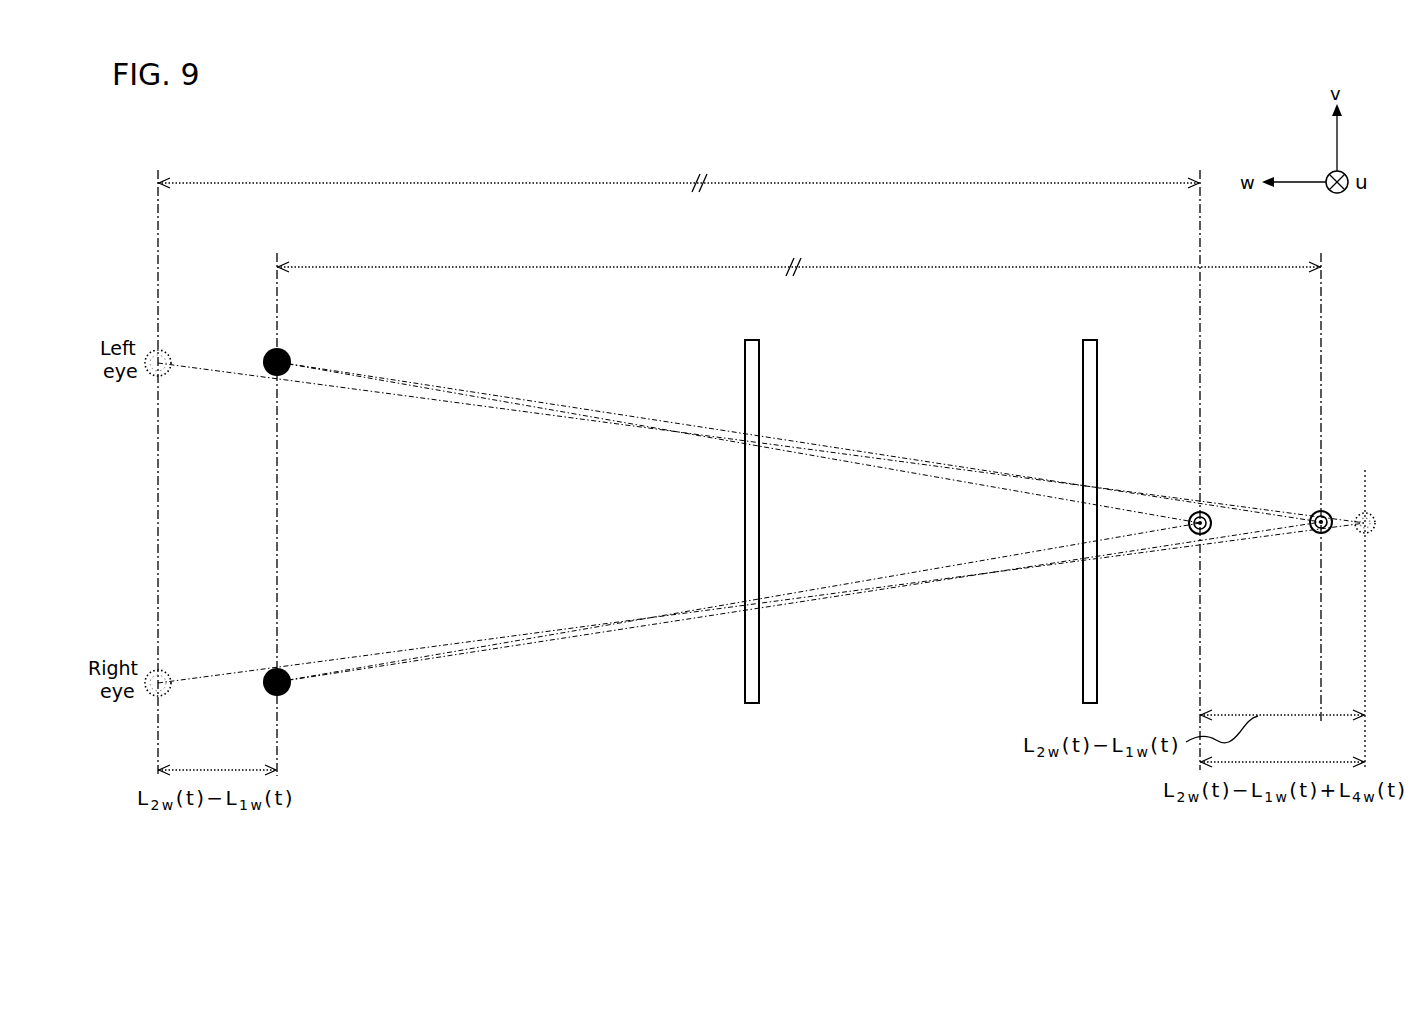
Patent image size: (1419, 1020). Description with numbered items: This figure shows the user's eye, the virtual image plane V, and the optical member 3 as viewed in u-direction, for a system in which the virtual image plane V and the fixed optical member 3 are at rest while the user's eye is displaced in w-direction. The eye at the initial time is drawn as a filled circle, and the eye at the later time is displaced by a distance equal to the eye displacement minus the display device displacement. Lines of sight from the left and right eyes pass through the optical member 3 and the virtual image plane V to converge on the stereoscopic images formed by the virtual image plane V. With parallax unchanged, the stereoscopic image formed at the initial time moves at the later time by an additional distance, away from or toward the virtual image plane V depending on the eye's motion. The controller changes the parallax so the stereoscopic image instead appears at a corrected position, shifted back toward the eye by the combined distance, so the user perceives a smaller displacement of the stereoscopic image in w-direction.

The optical member 3 is at (759, 367).
The virtual image plane V is at (1097, 372).